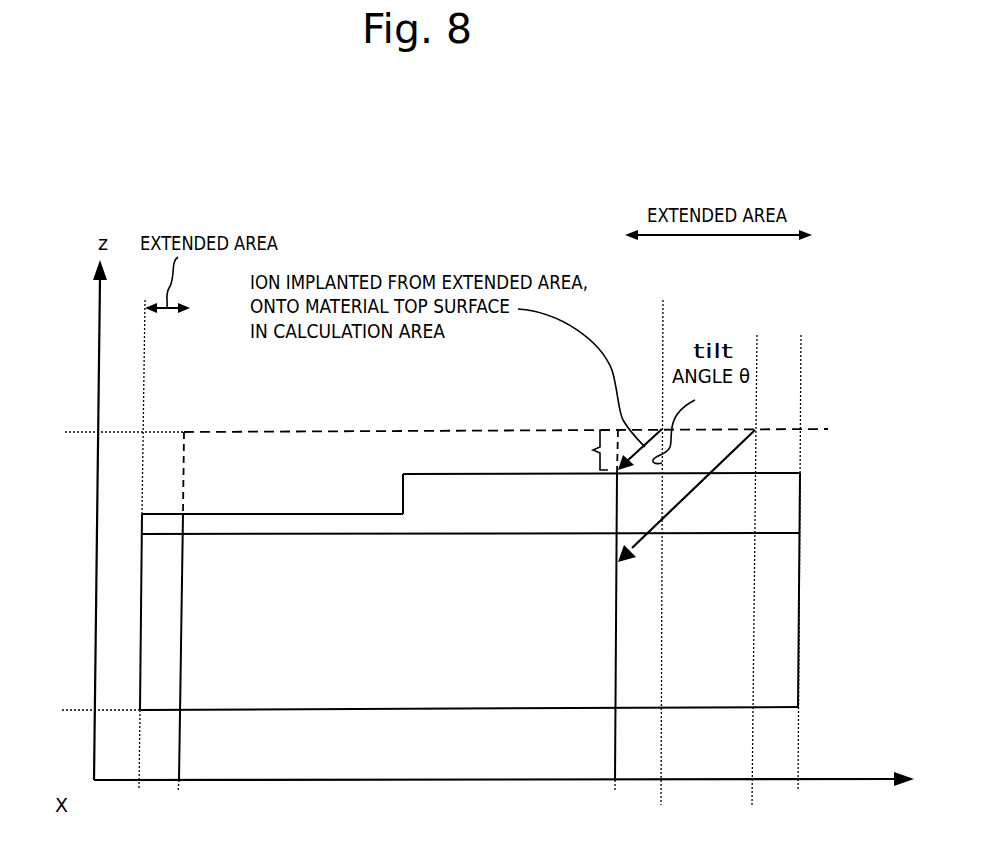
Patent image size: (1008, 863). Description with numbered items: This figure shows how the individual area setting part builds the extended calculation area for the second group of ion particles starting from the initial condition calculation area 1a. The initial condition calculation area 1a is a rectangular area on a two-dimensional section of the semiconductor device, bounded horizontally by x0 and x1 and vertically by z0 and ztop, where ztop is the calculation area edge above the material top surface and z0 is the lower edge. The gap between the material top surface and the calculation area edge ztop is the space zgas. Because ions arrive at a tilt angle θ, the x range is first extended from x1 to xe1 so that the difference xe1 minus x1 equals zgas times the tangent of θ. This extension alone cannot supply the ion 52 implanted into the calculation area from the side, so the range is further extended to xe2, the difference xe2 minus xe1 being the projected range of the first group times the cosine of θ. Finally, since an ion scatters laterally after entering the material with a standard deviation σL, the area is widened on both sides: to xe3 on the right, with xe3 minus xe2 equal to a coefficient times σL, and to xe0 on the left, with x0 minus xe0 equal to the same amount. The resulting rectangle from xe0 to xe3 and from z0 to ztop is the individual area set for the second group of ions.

The initial condition calculation area 1a is at (324, 432).
The ion implanted into a calculation area from the side 52 is at (723, 463).
The space between the material top surface and the calculation area edge zgas is at (592, 450).
The calculation area edge ztop is at (98, 434).
The lower z-coordinate limit z0 is at (411, 710).
The left extended x-coordinate xe0 is at (141, 556).
The lower x-coordinate limit x0 is at (181, 632).
The upper x-coordinate limit x1 is at (618, 623).
The first extended x-coordinate xe1 is at (673, 566).
The second extended x-coordinate xe2 is at (749, 583).
The right extended x-coordinate xe3 is at (808, 573).